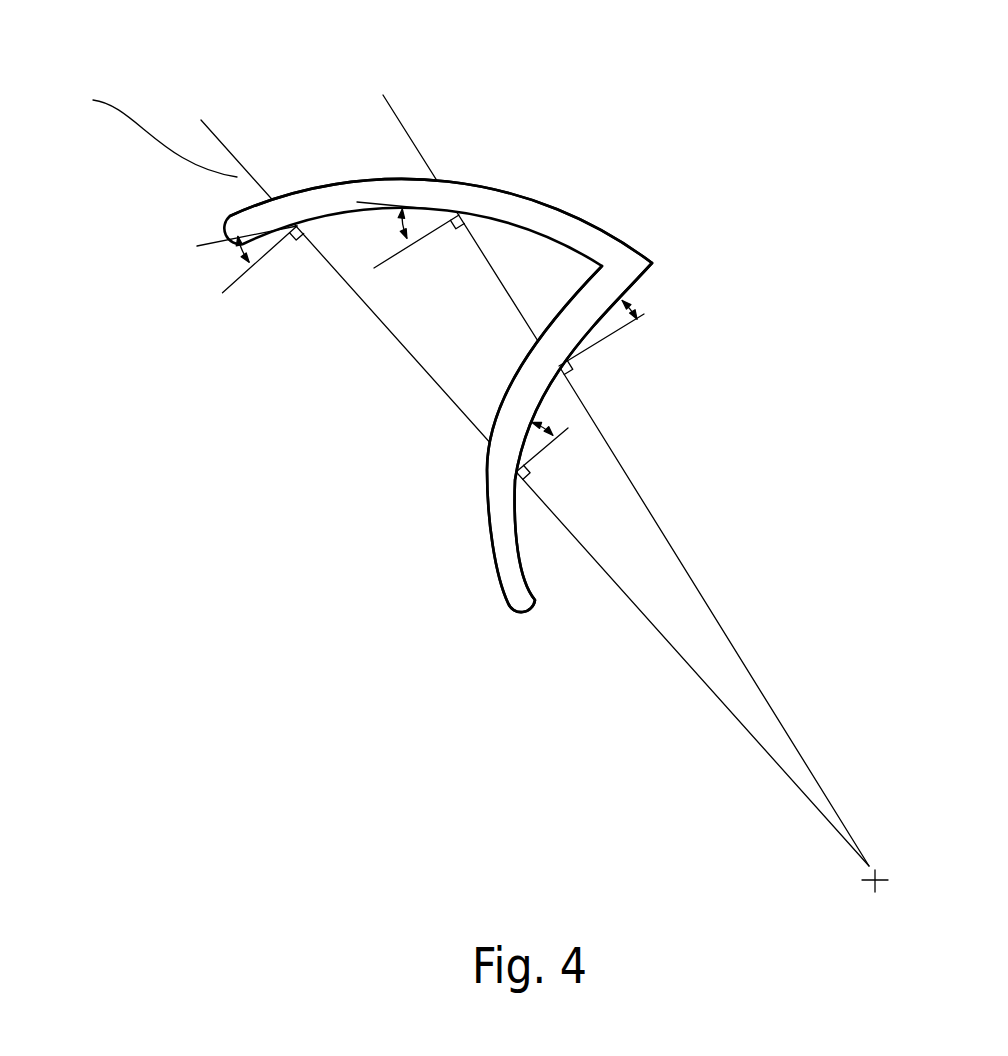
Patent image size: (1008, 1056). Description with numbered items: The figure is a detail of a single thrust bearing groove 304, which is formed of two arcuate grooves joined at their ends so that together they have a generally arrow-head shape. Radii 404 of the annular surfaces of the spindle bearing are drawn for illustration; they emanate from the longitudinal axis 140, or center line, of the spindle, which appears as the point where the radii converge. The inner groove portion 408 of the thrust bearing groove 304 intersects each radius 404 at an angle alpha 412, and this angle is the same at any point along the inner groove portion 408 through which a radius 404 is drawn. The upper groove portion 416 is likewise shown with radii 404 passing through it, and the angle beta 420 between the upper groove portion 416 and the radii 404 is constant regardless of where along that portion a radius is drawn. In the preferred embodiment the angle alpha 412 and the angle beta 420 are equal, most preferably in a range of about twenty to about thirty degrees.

The longitudinal axis 140 is at (872, 877).
The thrust bearing groove 304 is at (227, 232).
The radii 404 is at (400, 127).
The inner groove portion 408 is at (500, 475).
The angle α 412 is at (665, 293).
The upper groove portion 416 is at (457, 199).
The angle β 420 is at (366, 234).